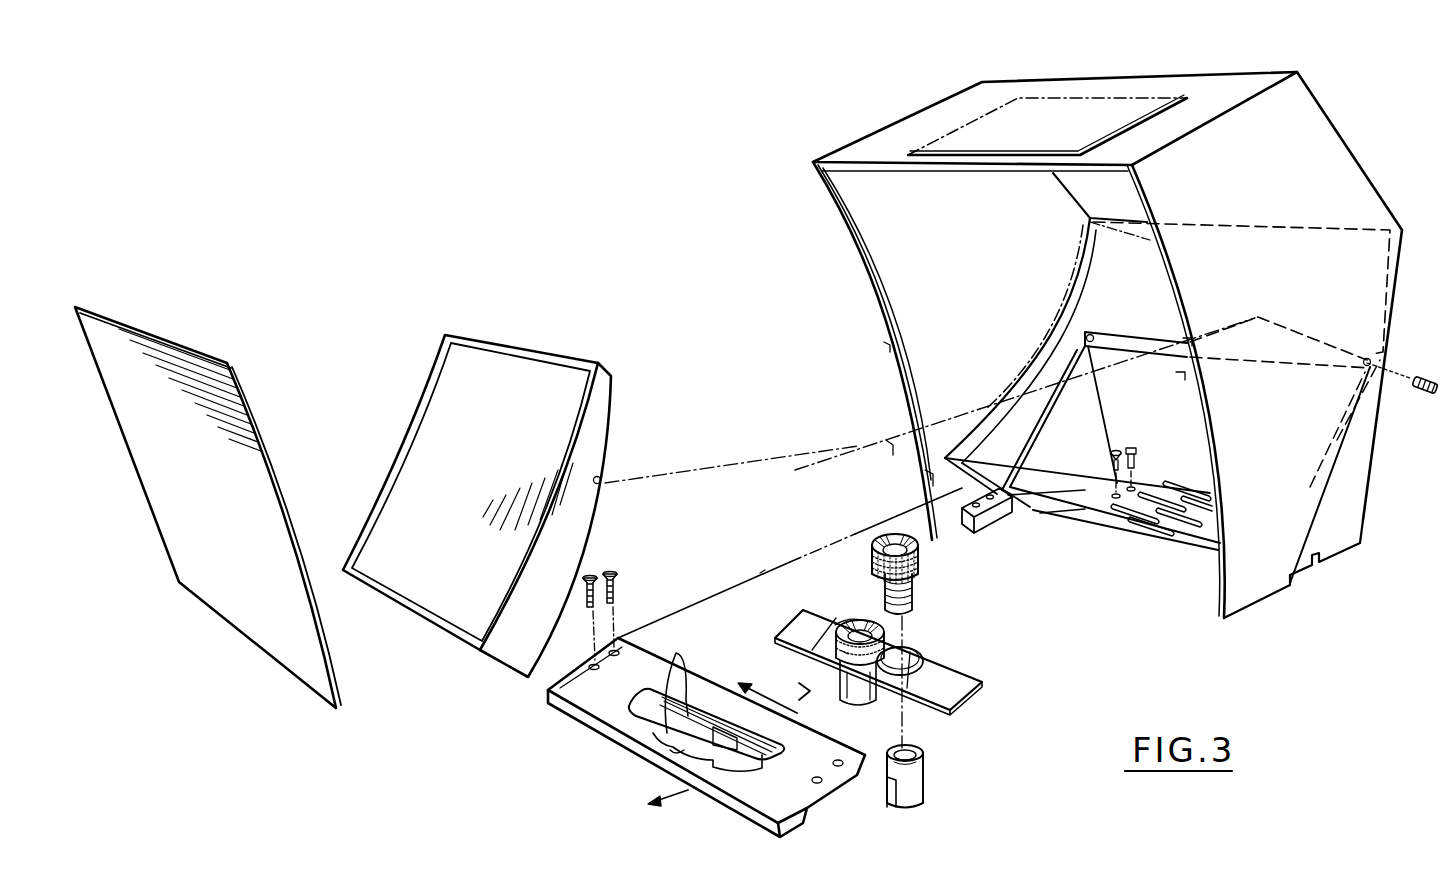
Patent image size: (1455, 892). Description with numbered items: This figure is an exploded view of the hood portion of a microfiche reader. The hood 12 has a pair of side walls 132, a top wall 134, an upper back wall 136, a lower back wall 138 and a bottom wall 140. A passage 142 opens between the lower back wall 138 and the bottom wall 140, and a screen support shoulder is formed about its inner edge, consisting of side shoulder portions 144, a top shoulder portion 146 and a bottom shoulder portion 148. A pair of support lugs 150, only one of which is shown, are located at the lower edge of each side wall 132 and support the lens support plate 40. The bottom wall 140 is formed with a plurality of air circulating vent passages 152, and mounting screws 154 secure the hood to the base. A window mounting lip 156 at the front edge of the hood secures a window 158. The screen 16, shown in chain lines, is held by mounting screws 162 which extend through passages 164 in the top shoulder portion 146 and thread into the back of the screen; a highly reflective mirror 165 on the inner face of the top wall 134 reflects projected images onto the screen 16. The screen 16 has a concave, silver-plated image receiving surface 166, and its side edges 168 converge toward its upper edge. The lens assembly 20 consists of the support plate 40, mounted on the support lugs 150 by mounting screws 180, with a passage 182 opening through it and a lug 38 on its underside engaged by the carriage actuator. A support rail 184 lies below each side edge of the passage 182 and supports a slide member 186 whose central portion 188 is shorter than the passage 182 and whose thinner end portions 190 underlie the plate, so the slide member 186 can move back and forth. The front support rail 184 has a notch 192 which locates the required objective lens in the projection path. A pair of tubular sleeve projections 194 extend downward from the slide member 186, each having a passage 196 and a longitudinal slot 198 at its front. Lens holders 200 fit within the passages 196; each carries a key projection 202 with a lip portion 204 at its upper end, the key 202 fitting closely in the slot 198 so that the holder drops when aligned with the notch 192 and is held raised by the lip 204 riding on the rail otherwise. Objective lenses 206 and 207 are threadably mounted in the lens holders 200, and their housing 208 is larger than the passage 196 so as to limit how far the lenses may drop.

The hood 12 is at (842, 292).
The screen 16 is at (557, 352).
The lens assembly 20 is at (790, 560).
The lug 38 is at (736, 755).
The lens support plate 40 is at (582, 697).
The side walls 132 is at (860, 222).
The top wall 134 is at (874, 146).
The upper back wall 136 is at (1088, 186).
The lower back wall 138 is at (1113, 265).
The bottom wall 140 is at (1065, 511).
The passage 142 is at (1229, 400).
The side shoulder portions 144 is at (1052, 436).
The top shoulder portion 146 is at (1140, 347).
The bottom shoulder portion 148 is at (1112, 525).
The support lugs 150 is at (990, 527).
The air circulating vent passages 152 is at (1190, 468).
The mounting screws 154 is at (1112, 457).
The window mounting lip 156 is at (889, 344).
The window 158 is at (266, 458).
The mounting screws 162 is at (1425, 394).
The passages 164 is at (1093, 334).
The mirror 165 is at (1055, 118).
The image receiving surface 166 is at (455, 408).
The side edges 168 is at (422, 428).
The mounting screws 180 is at (610, 573).
The passage 182 is at (612, 733).
The support rail 184 is at (676, 680).
The slide member 186 is at (950, 705).
The central portion 188 is at (838, 628).
The end portions 190 is at (805, 624).
The notch 192 is at (683, 750).
The tubular sleeve projections 194 is at (895, 696).
The passages 196 is at (917, 655).
The longitudinal slot 198 is at (849, 679).
The lens holders 200 is at (915, 590).
The key projection 202 is at (923, 790).
The lip portion 204 is at (890, 784).
The objective lens 206 is at (840, 652).
The objective lens 207 is at (873, 548).
The housing 208 is at (921, 554).